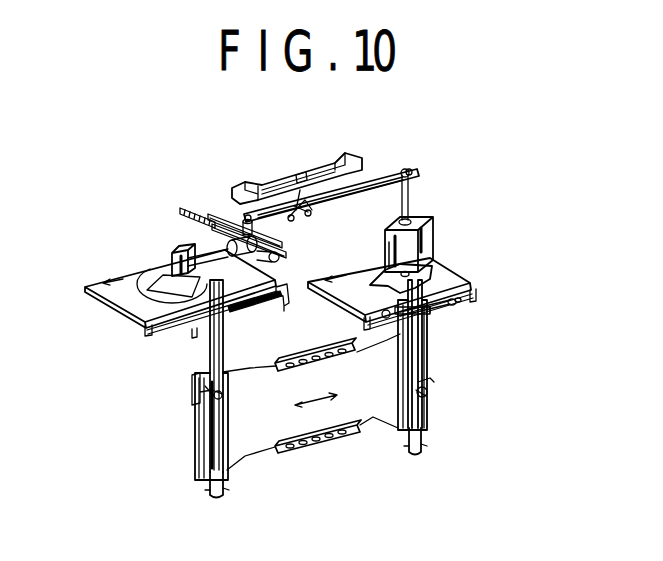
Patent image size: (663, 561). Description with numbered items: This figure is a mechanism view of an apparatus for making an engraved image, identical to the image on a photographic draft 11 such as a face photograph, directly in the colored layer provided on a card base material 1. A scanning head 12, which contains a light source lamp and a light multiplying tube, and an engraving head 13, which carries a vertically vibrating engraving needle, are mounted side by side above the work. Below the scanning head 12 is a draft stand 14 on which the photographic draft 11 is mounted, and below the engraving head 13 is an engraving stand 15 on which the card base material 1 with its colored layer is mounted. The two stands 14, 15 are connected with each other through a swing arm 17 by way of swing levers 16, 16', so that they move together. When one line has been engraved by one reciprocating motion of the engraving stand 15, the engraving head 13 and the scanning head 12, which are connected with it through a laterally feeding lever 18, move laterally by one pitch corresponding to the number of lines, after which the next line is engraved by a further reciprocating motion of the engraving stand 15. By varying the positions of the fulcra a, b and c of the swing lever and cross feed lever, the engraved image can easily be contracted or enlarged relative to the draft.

The card base material 1 is at (162, 274).
The photographic draft 11 is at (382, 278).
The scanning head 12 is at (434, 241).
The engraving head 13 is at (180, 247).
The draft stand 14 is at (452, 276).
The engraving stand 15 is at (112, 284).
The swing lever 16 is at (217, 389).
The swing lever 16' is at (419, 367).
The swing arm 17 is at (328, 406).
The laterally feeding lever 18 is at (372, 180).
The fulcrum a is at (307, 207).
The fulcrum b is at (192, 406).
The fulcrum c is at (433, 388).